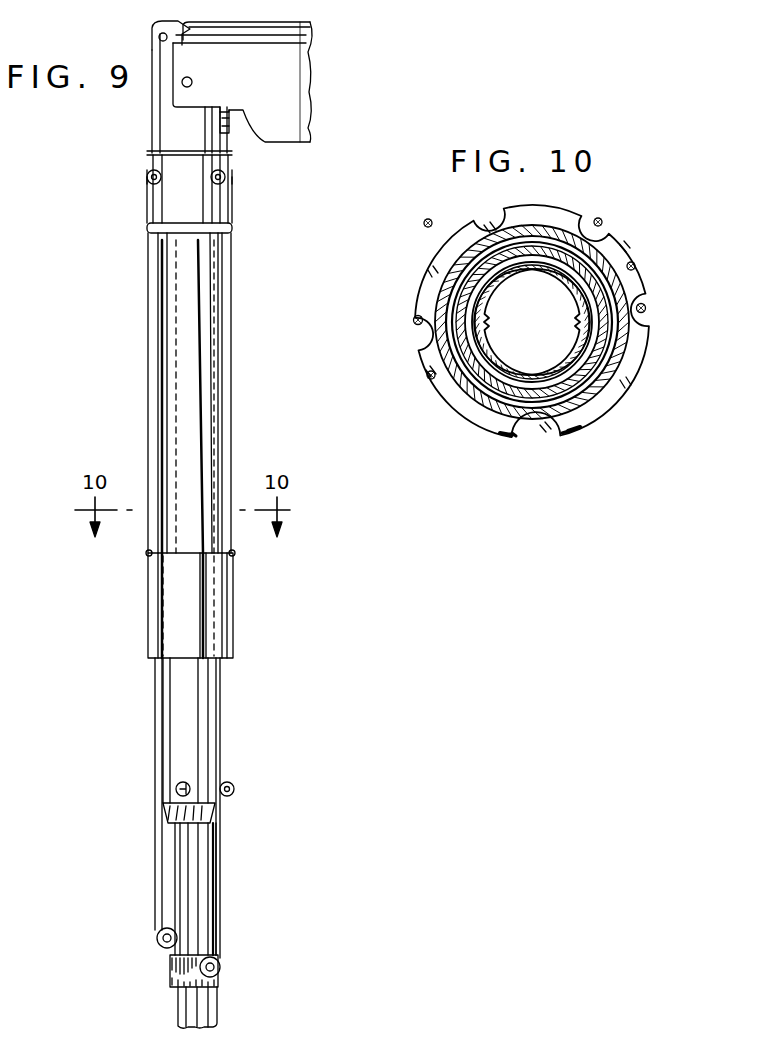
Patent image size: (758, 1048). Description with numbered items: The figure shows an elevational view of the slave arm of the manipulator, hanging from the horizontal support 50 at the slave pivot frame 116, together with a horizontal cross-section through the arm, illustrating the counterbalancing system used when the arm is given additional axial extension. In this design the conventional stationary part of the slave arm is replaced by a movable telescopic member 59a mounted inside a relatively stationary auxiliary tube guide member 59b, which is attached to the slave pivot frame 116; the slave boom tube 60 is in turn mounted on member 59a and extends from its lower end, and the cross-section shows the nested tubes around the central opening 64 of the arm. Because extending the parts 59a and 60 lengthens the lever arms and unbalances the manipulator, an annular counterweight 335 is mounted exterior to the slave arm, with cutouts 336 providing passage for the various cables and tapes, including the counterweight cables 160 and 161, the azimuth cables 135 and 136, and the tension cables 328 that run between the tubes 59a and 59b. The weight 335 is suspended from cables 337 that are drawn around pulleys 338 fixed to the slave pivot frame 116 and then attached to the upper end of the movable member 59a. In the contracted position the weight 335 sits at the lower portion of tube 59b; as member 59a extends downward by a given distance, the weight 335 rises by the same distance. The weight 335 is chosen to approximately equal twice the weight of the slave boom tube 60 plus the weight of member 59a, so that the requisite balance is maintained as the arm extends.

In FIG. 9, the horizontal support 50 is at (305, 68).
In FIG. 9, the slave pivot frame 116 is at (152, 140).
In FIG. 9, the pulleys 338 is at (148, 175).
In FIG. 9, the suspending cables 337 is at (232, 296).
In FIG. 10, the suspending cables 337 is at (637, 262).
In FIG. 9, the annular counterweight 335 is at (228, 584).
In FIG. 10, the annular counterweight 335 is at (640, 360).
In FIG. 9, the movable telescopic member 59a is at (215, 885).
In FIG. 10, the movable telescopic member 59a is at (513, 230).
In FIG. 9, the auxiliary tube guide member 59b is at (220, 718).
In FIG. 10, the auxiliary tube guide member 59b is at (493, 306).
In FIG. 9, the slave boom tube 60 is at (218, 1013).
In FIG. 10, the bore 64 is at (506, 284).
In FIG. 10, the azimuth cable 136 is at (427, 219).
In FIG. 10, the azimuth cable 135 is at (601, 219).
In FIG. 10, the cutouts 336 is at (604, 230).
In FIG. 10, the cables 328 is at (412, 319).
In FIG. 10, the counterweight cable 160 is at (512, 440).
In FIG. 10, the counterweight cable 161 is at (573, 434).